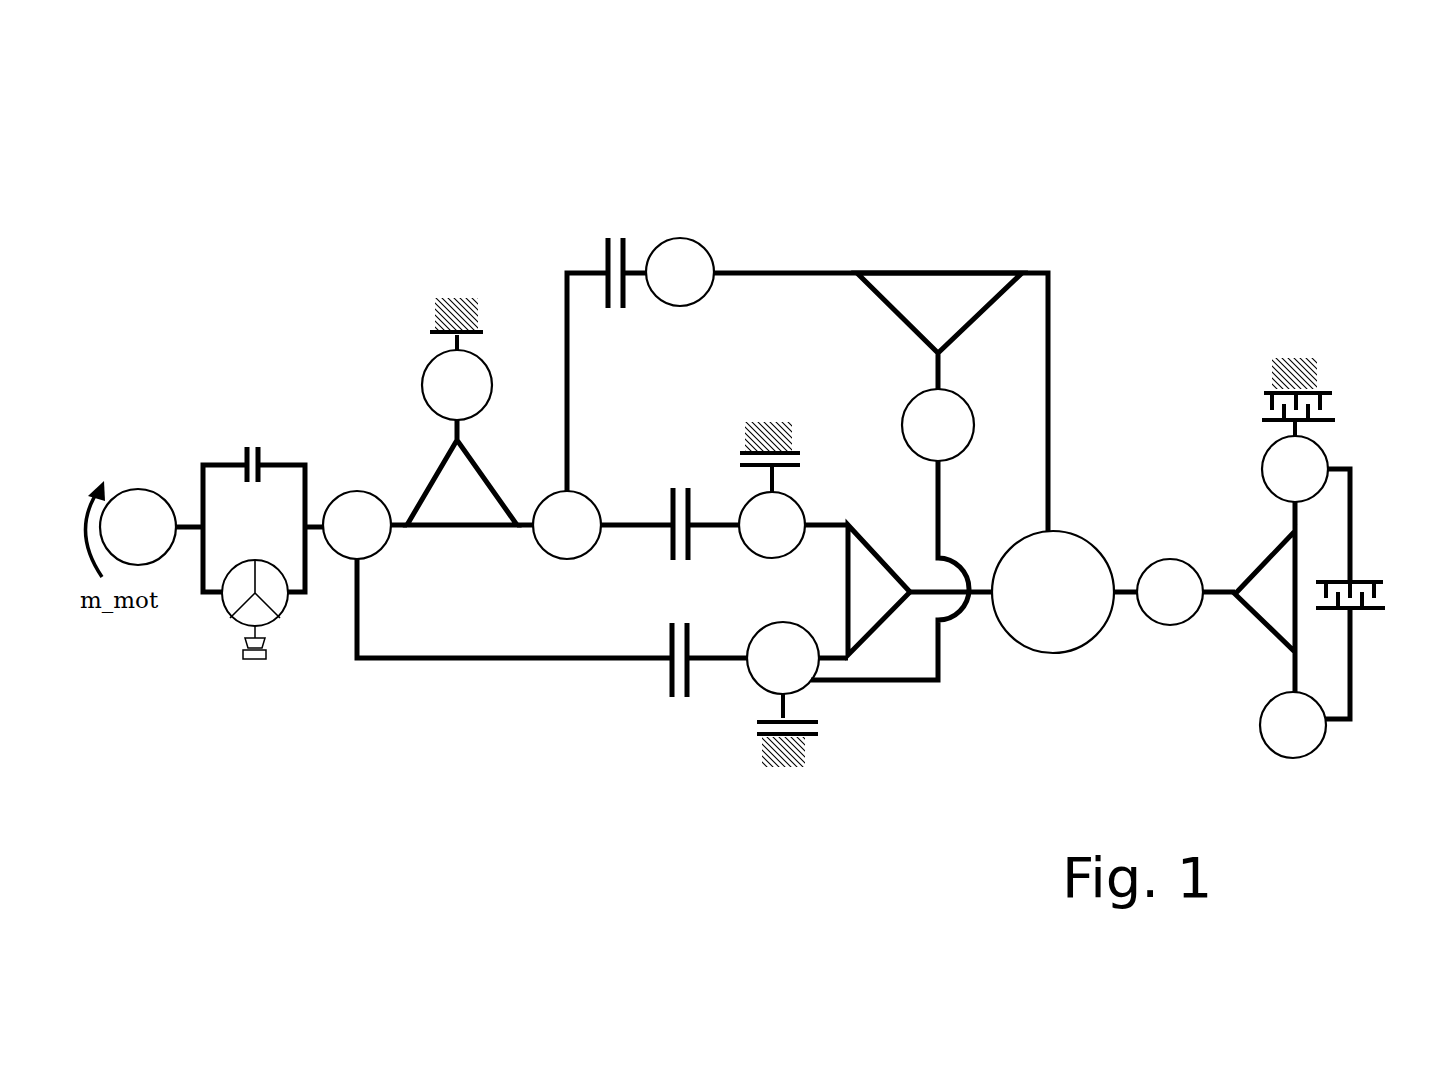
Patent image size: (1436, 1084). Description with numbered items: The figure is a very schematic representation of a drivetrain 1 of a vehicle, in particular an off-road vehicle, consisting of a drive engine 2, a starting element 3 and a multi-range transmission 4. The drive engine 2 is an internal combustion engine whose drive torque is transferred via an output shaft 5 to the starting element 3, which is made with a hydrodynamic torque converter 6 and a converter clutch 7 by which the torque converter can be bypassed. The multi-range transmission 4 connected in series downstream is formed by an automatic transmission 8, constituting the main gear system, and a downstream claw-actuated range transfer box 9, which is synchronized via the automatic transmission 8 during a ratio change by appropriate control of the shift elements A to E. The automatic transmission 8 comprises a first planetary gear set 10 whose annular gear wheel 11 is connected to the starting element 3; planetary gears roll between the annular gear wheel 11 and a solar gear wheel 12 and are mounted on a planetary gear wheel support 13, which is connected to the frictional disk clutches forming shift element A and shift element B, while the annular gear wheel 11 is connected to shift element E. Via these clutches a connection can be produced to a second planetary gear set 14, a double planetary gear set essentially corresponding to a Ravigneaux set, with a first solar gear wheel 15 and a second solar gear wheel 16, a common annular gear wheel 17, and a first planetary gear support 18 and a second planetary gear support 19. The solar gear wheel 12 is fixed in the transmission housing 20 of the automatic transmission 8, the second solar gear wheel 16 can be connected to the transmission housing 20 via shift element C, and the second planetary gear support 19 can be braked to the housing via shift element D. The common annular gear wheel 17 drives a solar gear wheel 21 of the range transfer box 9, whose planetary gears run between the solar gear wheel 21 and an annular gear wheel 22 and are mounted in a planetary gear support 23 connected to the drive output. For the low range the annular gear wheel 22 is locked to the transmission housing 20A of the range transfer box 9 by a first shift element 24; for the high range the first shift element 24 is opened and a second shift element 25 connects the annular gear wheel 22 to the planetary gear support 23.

The drivetrain 1 is at (224, 258).
The drive engine 2 is at (136, 525).
The starting element 3 is at (246, 422).
The multi-range transmission 4 is at (458, 262).
The output shaft 5 is at (186, 520).
The hydrodynamic torque converter 6 is at (237, 600).
The converter clutch 7 is at (262, 460).
The automatic transmission 8 is at (786, 272).
The range transfer box 9 is at (1280, 535).
The first planetary gear set 10 is at (455, 550).
The annular gear wheel 11 is at (367, 507).
The solar gear wheel 12 is at (475, 383).
The planetary gear wheel support 13 is at (571, 517).
The second planetary gear set 14 is at (1065, 400).
The first solar gear wheel 15 is at (688, 265).
The second solar gear wheel 16 is at (788, 512).
The common annular gear wheel 17 is at (1060, 595).
The first planetary gear support 18 is at (950, 423).
The second planetary gear support 19 is at (780, 660).
The transmission housing 20 is at (445, 305).
The transmission housing of the range transfer box 20A is at (1290, 370).
The solar gear wheel 21 is at (1157, 550).
The annular gear wheel 22 is at (1300, 462).
The planetary gear support 23 is at (1287, 745).
The first shift element 24 is at (1327, 390).
The second shift element 25 is at (1370, 578).
The shift element A is at (622, 250).
The shift element B is at (684, 487).
The shift element C is at (795, 455).
The shift element D is at (818, 738).
The shift element E is at (670, 680).